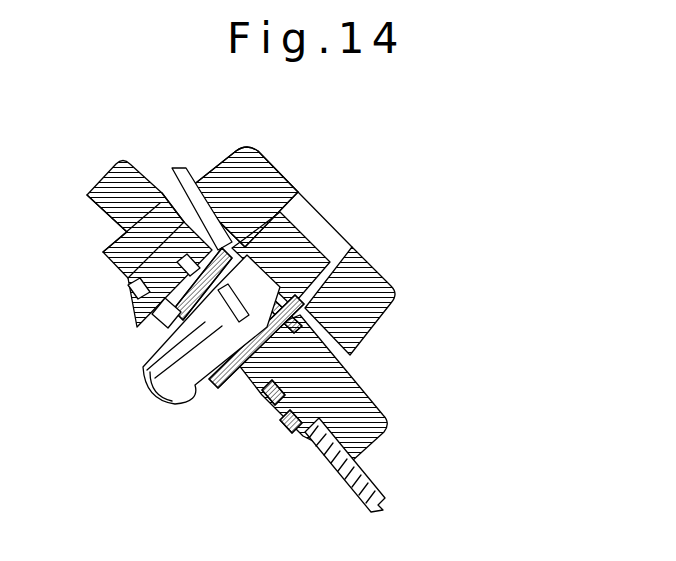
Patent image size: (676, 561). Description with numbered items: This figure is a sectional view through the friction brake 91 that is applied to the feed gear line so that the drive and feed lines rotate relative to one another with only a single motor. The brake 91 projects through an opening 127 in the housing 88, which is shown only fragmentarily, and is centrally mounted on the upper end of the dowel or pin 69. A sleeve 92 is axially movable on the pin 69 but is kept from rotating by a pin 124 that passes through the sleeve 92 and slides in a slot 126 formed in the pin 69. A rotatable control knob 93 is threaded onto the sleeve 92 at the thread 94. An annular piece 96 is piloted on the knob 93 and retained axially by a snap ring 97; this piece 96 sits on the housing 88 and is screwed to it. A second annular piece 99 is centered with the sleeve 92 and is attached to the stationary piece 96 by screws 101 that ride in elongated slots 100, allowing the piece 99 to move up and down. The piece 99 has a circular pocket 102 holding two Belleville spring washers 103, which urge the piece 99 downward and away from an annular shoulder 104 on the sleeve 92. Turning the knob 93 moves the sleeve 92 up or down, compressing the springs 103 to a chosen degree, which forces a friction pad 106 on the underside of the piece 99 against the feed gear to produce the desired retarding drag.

The dowel or pin 69 is at (182, 380).
The housing 88 is at (330, 468).
The friction brake 91 is at (296, 166).
The sleeve 92 is at (312, 252).
The rotatable control knob 93 is at (248, 160).
The threaded connection 94 is at (227, 242).
The annular piece 96 is at (135, 185).
The snap ring 97 is at (333, 323).
The annular piece 99 is at (133, 290).
The elongated slots 100 is at (143, 218).
The screws 101 is at (168, 200).
The circular pocket 102 is at (160, 325).
The Belleville spring washers 103 is at (268, 392).
The annular shoulder 104 is at (110, 237).
The friction pad 106 is at (157, 312).
The pin 124 is at (178, 398).
The slot 126 is at (165, 385).
The opening 127 is at (292, 433).